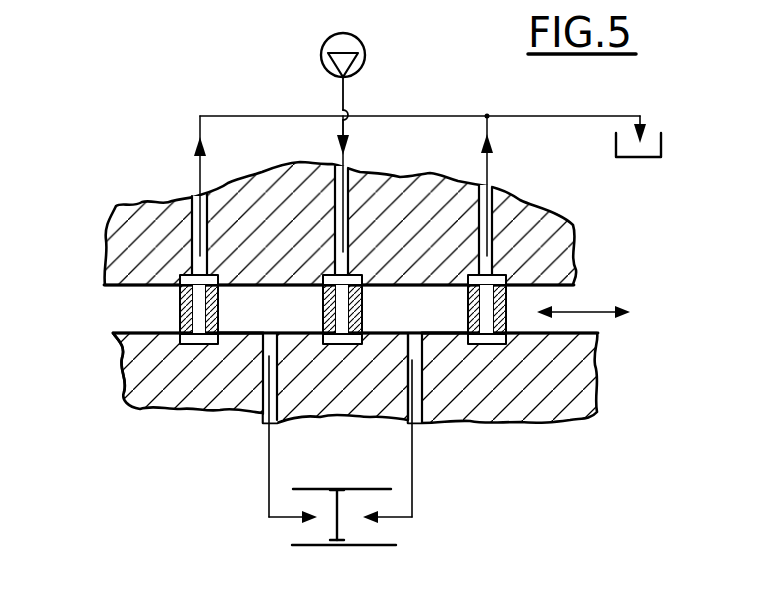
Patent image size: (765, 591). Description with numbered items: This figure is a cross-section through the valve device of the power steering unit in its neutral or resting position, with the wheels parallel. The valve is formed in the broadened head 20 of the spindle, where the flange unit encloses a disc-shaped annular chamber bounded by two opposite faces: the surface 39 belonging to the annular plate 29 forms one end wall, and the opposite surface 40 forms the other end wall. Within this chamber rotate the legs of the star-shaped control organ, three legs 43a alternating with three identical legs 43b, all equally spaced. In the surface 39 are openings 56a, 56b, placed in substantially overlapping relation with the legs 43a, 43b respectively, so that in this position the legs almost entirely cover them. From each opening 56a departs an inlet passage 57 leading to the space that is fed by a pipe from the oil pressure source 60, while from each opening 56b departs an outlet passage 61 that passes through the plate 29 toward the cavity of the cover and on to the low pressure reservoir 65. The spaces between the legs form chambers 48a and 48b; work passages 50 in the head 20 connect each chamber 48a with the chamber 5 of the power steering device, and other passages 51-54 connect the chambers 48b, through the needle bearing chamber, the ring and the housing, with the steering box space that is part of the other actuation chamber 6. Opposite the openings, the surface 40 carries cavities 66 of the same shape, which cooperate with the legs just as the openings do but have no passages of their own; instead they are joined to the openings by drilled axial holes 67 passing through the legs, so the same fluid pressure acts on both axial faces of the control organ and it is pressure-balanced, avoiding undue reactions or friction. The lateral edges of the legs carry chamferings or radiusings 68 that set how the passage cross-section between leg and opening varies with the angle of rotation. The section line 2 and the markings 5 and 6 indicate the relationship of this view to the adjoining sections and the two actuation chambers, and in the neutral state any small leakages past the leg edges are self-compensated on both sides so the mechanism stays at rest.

The bore 2 is at (363, 546).
The chamber of the power steering device 5 is at (330, 506).
The other actuation chamber 6 is at (371, 515).
The head 20 is at (151, 408).
The annular plate 29 is at (156, 214).
The surface 39 is at (113, 289).
The surface 40 is at (133, 331).
The legs 43a is at (370, 338).
The legs 43b is at (130, 372).
The chambers 48a is at (246, 336).
The chambers 48b is at (442, 336).
The work passages 50 is at (270, 412).
The work passages and connecting passages 51-54 is at (414, 417).
The openings 56a is at (325, 291).
The openings 56b is at (179, 289).
The inlet passage 57 is at (351, 186).
The oil pressure source 60 is at (366, 60).
The outlet passages 61 is at (208, 218).
The reservoir 65 is at (627, 158).
The cavities 66 is at (180, 365).
The drilled axial holes 67 is at (206, 299).
The chamferings or radiusings 68 is at (362, 290).